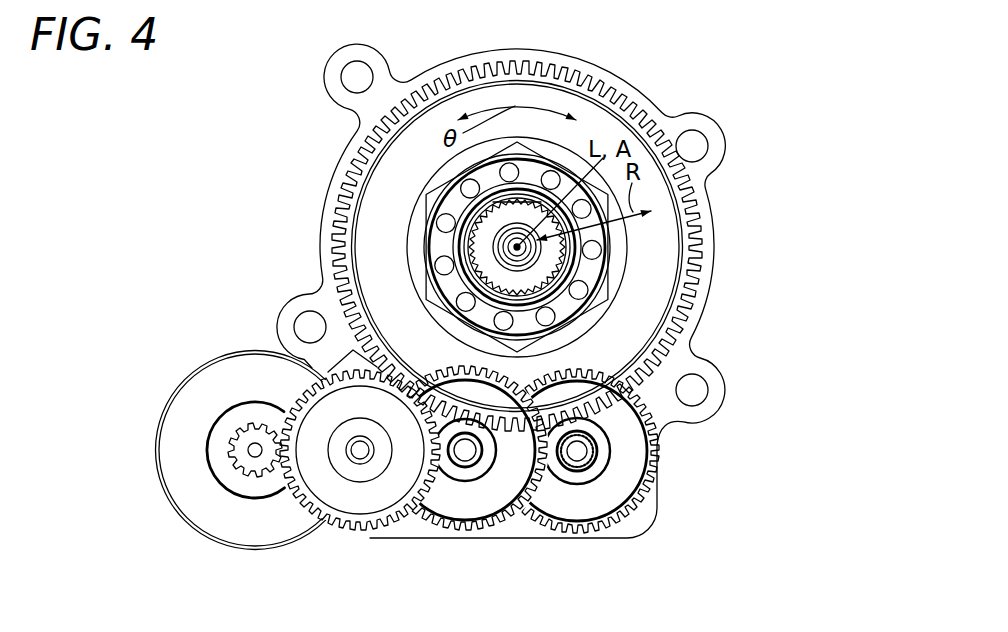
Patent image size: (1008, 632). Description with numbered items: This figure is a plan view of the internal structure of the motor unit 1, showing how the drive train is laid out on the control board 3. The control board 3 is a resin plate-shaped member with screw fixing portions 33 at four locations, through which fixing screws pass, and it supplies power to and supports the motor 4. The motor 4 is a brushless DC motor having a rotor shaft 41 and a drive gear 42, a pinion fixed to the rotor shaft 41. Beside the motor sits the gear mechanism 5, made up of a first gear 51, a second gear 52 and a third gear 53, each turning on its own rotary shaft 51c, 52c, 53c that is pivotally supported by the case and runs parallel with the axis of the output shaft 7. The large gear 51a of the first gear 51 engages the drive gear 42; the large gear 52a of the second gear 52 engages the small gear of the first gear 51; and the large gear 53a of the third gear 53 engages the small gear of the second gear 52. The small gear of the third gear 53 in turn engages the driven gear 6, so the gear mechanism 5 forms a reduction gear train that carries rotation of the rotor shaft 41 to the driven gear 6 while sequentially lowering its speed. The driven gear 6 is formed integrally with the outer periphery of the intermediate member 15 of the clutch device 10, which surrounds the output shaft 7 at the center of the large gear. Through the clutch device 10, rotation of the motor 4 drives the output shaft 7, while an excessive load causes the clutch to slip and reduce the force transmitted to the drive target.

The motor unit 1 is at (498, 291).
The control board 3 is at (705, 322).
The screw fixing portions 33 is at (353, 77).
The motor 4 is at (229, 450).
The rotor shaft 41 is at (233, 456).
The drive gear 42 is at (233, 466).
The gear mechanism 5 is at (503, 490).
The first gear 51 is at (352, 492).
The large gear of first gear 51a is at (302, 508).
The rotary shaft of first gear 51c is at (364, 460).
The second gear 52 is at (465, 489).
The large gear of second gear 52a is at (480, 530).
The rotary shaft of second gear 52c is at (479, 463).
The third gear 53 is at (619, 475).
The large gear of third gear 53a is at (637, 502).
The rotary shaft of third gear 53c is at (600, 456).
The driven gear 6 is at (702, 222).
The output shaft 7 is at (578, 274).
The clutch device 10 is at (418, 186).
The intermediate member 15 is at (377, 240).